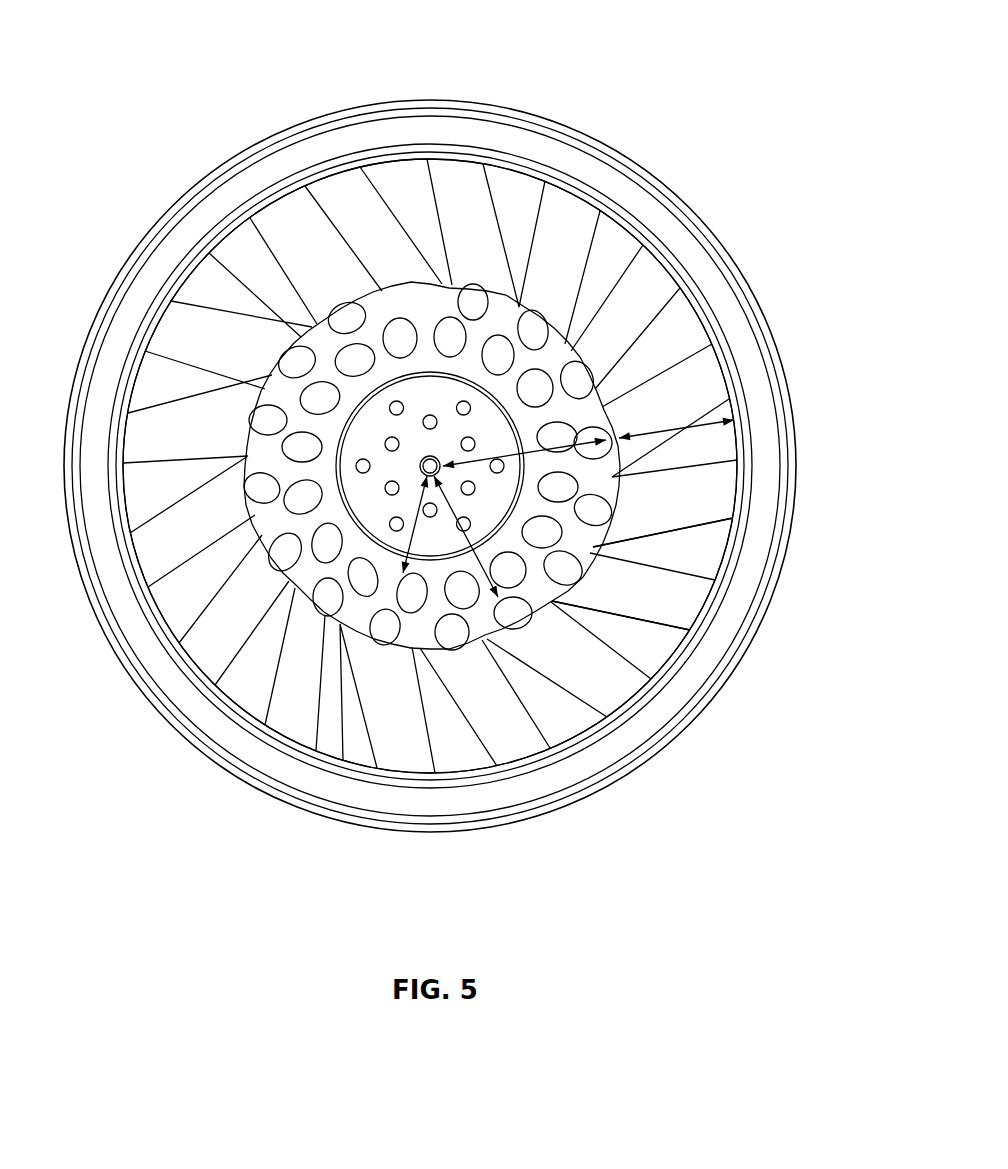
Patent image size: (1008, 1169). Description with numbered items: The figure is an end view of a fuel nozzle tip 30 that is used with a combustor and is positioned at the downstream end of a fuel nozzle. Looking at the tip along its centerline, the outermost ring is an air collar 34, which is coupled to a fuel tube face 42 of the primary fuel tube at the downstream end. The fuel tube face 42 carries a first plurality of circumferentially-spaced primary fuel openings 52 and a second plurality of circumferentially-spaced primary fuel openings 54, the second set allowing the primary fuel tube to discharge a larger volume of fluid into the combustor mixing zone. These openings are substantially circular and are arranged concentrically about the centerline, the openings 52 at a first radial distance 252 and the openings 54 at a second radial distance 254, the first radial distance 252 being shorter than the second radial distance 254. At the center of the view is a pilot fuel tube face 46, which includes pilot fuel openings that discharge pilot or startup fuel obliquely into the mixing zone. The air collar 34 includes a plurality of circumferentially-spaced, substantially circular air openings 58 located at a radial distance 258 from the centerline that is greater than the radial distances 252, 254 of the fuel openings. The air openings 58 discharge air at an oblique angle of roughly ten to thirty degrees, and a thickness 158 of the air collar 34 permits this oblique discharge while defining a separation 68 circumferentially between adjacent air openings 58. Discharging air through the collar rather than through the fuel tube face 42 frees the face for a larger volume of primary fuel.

The fuel nozzle tip 30 is at (118, 52).
The air collar 34 is at (545, 720).
The fuel tube face 42 is at (318, 574).
The pilot fuel tube face 46 is at (443, 399).
The first plurality of primary fuel openings 52 is at (400, 338).
The second plurality of primary fuel openings 54 is at (295, 360).
The air openings 58 is at (698, 597).
The separation 68 is at (718, 548).
The thickness of air collar 158 is at (740, 419).
The first radial distance 252 is at (404, 548).
The second radial distance 254 is at (468, 543).
The radial distance 258 is at (603, 407).